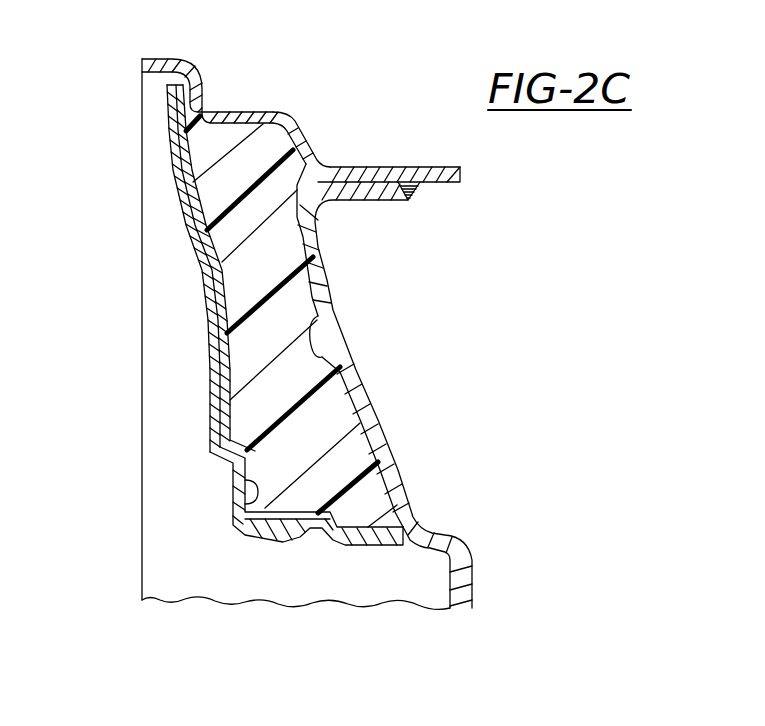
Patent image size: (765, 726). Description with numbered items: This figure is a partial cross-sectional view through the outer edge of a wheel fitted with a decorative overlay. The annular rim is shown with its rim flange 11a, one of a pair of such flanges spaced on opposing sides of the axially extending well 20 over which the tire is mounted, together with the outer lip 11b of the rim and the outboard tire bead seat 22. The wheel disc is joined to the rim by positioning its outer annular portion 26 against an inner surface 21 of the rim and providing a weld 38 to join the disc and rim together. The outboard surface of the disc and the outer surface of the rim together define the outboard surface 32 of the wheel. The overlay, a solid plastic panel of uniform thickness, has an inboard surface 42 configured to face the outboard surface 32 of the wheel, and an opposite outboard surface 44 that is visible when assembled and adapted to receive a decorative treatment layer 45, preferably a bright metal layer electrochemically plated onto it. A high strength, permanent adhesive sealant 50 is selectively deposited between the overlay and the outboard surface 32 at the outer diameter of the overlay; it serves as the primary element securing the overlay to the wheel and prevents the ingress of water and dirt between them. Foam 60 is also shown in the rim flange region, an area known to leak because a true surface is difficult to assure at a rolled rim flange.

The rim flange 11a is at (175, 58).
The outer lip 11b is at (142, 70).
The axially extending well 20 is at (417, 167).
The inner surface 21 is at (450, 180).
The outboard tire bead seat 22 is at (247, 110).
The outer annular portion 26 is at (380, 201).
The outboard surface 32 is at (324, 357).
The weld 38 is at (440, 203).
The inboard surface 42 is at (255, 515).
The outboard surface 44 is at (212, 348).
The decorative treatment layer 45 is at (203, 291).
The adhesive sealant 50 is at (167, 100).
The foam 60 is at (348, 432).